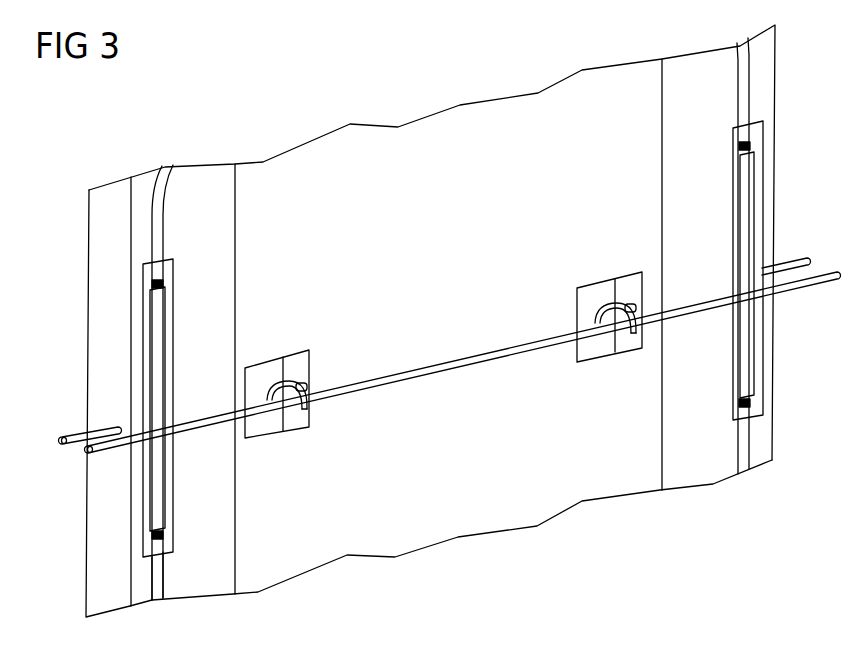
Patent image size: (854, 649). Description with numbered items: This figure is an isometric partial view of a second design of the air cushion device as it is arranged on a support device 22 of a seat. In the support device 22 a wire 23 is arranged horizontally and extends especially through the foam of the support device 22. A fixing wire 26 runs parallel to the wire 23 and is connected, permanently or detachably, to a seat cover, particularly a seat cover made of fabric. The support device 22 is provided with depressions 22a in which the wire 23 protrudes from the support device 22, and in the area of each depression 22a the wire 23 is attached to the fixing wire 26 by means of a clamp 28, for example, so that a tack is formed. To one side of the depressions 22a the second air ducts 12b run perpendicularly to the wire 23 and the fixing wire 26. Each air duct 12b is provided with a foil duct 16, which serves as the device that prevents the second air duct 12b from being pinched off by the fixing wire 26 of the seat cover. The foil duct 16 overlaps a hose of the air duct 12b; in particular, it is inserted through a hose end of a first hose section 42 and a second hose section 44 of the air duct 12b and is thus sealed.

The support device 22 is at (98, 277).
The second air duct 12b is at (160, 228).
The second hose section 44 is at (158, 247).
The foil duct 16 is at (156, 351).
The first hose section 42 is at (156, 571).
The fixing wire 26 is at (808, 285).
The wire 23 is at (794, 268).
The depression 22a is at (277, 368).
The clamp 28 is at (612, 298).